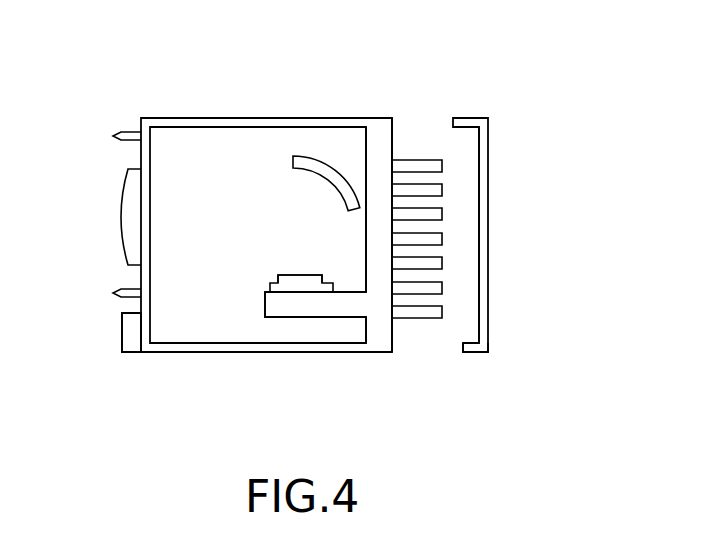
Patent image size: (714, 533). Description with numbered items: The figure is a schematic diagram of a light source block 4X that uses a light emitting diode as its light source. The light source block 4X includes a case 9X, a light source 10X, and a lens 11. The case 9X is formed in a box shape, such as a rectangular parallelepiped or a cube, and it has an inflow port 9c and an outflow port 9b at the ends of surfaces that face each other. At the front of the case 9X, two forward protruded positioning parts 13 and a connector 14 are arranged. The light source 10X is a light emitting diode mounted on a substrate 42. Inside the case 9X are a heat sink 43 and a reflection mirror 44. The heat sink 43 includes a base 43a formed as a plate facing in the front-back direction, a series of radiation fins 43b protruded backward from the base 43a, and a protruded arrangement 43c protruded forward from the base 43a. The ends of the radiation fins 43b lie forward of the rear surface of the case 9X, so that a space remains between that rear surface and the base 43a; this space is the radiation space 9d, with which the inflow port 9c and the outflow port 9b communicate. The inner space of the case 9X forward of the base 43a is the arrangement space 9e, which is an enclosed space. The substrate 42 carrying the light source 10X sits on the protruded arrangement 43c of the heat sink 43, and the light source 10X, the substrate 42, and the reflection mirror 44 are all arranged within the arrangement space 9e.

The light source block 4X is at (566, 60).
The case 9X is at (257, 200).
The outflow port 9b is at (465, 350).
The inflow port 9c is at (448, 118).
The radiation space 9d is at (473, 156).
The arrangement space 9e is at (265, 166).
The light source 10X is at (280, 275).
The lens 11 is at (128, 210).
The positioning parts 13 is at (130, 130).
The connector 14 is at (121, 340).
The substrate 42 is at (272, 287).
The heat sink 43 is at (416, 222).
The base 43a is at (404, 126).
The radiation fins 43b is at (442, 164).
The protruded arrangement 43c is at (320, 308).
The reflection mirror 44 is at (330, 172).